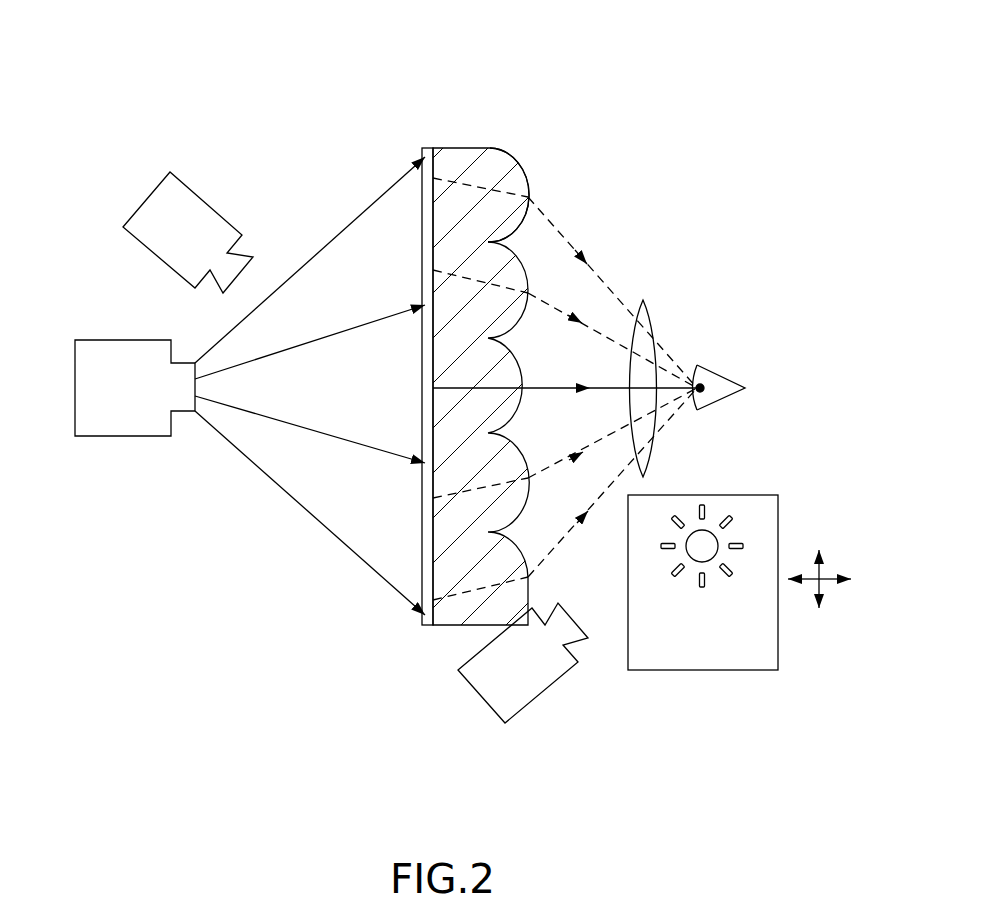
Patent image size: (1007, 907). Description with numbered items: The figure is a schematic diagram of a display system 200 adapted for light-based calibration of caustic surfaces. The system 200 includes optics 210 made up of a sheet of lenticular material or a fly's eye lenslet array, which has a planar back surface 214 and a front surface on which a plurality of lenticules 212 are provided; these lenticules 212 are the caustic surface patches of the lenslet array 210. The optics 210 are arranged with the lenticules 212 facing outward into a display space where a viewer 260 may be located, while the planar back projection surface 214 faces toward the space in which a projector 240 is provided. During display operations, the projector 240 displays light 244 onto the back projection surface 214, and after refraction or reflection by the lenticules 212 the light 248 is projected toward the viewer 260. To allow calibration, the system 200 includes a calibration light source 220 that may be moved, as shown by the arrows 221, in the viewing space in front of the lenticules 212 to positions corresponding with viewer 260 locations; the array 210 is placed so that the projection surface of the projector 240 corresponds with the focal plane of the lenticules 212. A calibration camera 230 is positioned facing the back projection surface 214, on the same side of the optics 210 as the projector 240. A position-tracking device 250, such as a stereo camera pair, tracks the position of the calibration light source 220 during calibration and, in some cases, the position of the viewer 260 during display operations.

The display system 200 is at (663, 137).
The optics 210 is at (479, 349).
The lenticules 212 is at (525, 217).
The planar back surface 214 is at (423, 148).
The calibration light source 220 is at (721, 663).
The arrows 221 is at (826, 598).
The calibration camera 230 is at (141, 206).
The projector 240 is at (95, 340).
The light 244 is at (275, 502).
The light 248 is at (645, 300).
The position-tracking device 250 is at (470, 690).
The viewer 260 is at (728, 352).